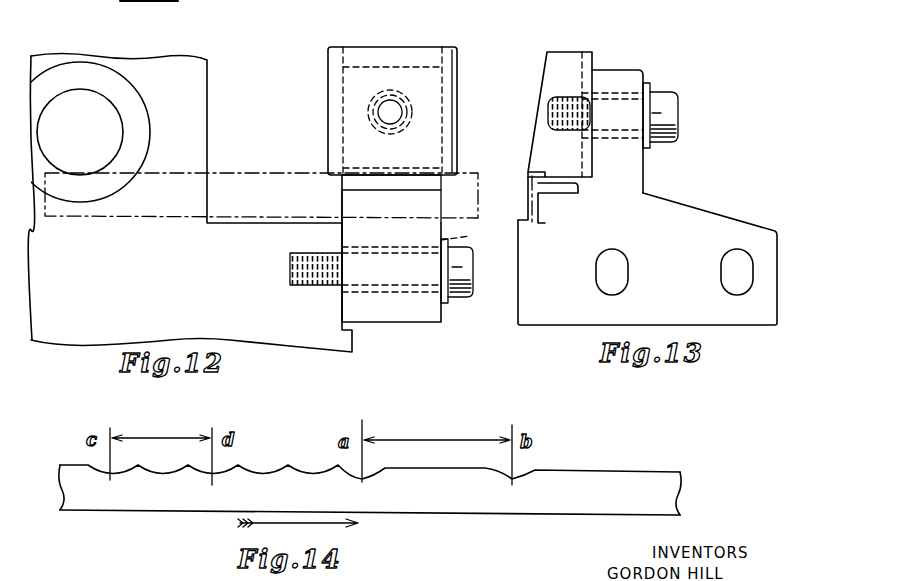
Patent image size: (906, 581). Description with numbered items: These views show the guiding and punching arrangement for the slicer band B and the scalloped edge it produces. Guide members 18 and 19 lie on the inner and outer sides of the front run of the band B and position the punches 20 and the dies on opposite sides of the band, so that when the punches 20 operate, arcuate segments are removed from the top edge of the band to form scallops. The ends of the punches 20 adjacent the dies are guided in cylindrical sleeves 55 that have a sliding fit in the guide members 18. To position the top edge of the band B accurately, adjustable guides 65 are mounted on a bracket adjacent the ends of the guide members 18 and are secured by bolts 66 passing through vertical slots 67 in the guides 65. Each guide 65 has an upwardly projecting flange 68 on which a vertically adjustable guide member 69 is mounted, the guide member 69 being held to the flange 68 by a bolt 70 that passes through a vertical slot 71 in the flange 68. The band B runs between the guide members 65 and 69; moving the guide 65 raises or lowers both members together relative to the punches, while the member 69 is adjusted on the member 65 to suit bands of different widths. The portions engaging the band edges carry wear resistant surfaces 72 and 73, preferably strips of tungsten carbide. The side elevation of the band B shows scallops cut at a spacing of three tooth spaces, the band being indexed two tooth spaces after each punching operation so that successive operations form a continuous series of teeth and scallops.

In FIG. 12, the guide member 18 is at (198, 297).
In FIG. 12, the guide member 19 is at (207, 128).
In FIG. 12, the punch 20 is at (110, 124).
In FIG. 12, the cylindrical sleeve 55 is at (118, 96).
In FIG. 12, the adjustable guide 65 is at (420, 312).
In FIG. 13, the adjustable guide 65 is at (710, 218).
In FIG. 12, the bolt 66 is at (462, 300).
In FIG. 12, the vertical slot 67 is at (412, 250).
In FIG. 13, the vertical slot 67 is at (618, 266).
In FIG. 12, the upwardly projecting flange 68 is at (400, 67).
In FIG. 13, the upwardly projecting flange 68 is at (630, 170).
In FIG. 12, the guide member 69 is at (328, 64).
In FIG. 13, the guide member 69 is at (563, 58).
In FIG. 12, the bolt 70 is at (385, 122).
In FIG. 13, the bolt 70 is at (668, 100).
In FIG. 12, the vertical slot 71 is at (402, 101).
In FIG. 13, the vertical slot 71 is at (615, 92).
In FIG. 12, the wear resistant surface 72 is at (378, 222).
In FIG. 13, the wear resistant surface 72 is at (538, 226).
In FIG. 12, the wear resistant surface 73 is at (391, 172).
In FIG. 13, the wear resistant surface 73 is at (525, 175).
In FIG. 12, the band B is at (238, 173).
In FIG. 13, the band B is at (528, 194).
In FIG. 14, the band B is at (575, 472).